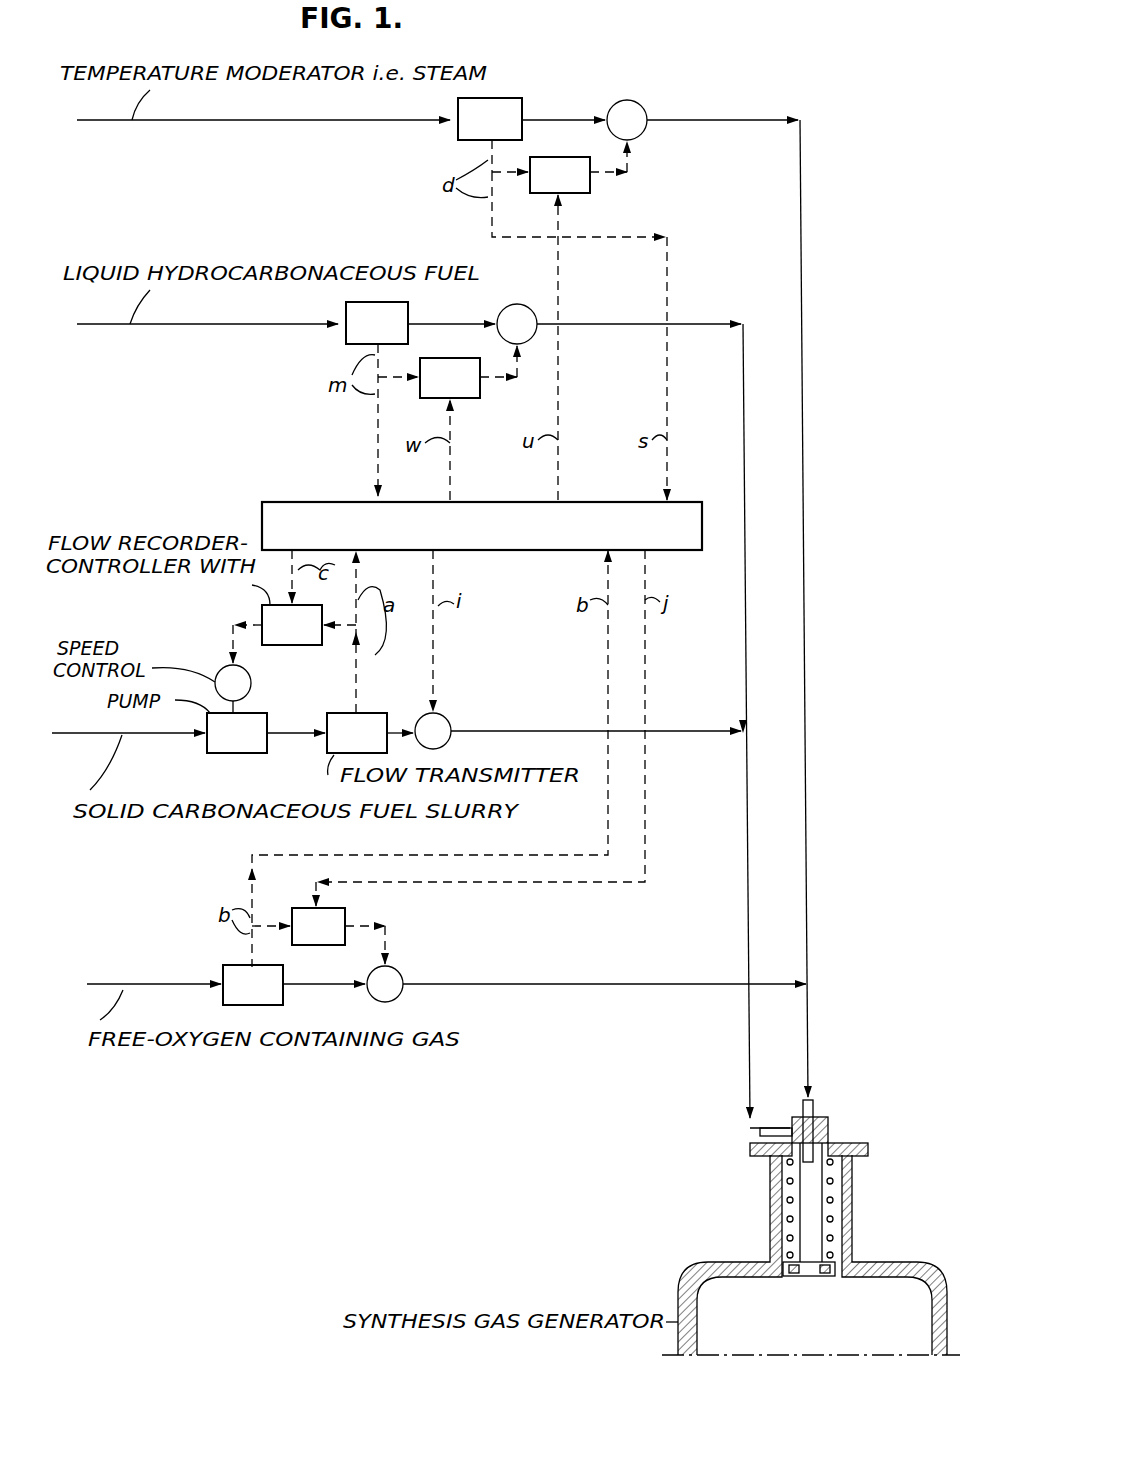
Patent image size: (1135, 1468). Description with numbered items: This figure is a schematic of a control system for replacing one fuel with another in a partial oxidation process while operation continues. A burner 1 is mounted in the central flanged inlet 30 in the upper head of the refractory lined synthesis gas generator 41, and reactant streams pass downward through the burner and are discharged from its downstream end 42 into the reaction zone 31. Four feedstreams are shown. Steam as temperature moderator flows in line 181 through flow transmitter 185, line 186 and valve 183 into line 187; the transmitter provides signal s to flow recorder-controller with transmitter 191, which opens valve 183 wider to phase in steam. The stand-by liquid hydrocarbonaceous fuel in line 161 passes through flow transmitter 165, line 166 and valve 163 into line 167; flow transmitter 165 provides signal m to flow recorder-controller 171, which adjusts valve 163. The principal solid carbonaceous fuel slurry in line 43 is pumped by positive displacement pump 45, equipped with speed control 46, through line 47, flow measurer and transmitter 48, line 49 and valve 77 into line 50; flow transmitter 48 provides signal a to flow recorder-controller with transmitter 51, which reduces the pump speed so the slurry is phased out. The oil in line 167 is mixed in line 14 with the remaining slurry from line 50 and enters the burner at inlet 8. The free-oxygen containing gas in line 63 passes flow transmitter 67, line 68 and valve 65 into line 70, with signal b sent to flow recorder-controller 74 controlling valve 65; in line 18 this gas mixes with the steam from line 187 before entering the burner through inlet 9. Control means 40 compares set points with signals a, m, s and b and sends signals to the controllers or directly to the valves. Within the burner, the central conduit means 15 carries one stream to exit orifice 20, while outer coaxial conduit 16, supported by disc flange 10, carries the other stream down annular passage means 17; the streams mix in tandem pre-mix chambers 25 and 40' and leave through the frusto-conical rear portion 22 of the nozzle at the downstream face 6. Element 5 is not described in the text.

The line 181 is at (138, 126).
The flow transmitter 185 is at (522, 100).
The line 186 is at (566, 118).
The valve 183 is at (640, 104).
The line 187 is at (722, 120).
The flow recorder-controller with transmitter 191 is at (585, 150).
The line 161 is at (138, 330).
The flow transmitter 165 is at (346, 306).
The line 166 is at (458, 300).
The valve 163 is at (525, 305).
The line 167 is at (693, 322).
The flow recorder-controller with transmitter 171 is at (470, 352).
The control means 40 is at (482, 508).
The flow recorder-controller with transmitter 51 is at (203, 631).
The speed control 46 is at (250, 678).
The positive displacement pump 45 is at (265, 713).
The line 47 is at (293, 732).
The flow measurer and transmitter 48 is at (366, 713).
The line 49 is at (392, 726).
The valve 77 is at (447, 718).
The line 50 is at (540, 730).
The line 43 is at (140, 736).
The line 14 is at (746, 895).
The flow recorder-controller with transmitter 74 is at (300, 908).
The line 63 is at (150, 968).
The flow transmitter 67 is at (230, 967).
The line 68 is at (326, 982).
The valve 65 is at (398, 972).
The line 70 is at (605, 982).
The line 18 is at (812, 1093).
The inlet 8 is at (782, 1125).
The inlet 9 is at (815, 1130).
The central conduit means 15 is at (824, 1135).
The annular passage means 17 is at (830, 1140).
The outer coaxial conduit 16 is at (840, 1146).
The disc flange 10 is at (860, 1150).
The burner 1 is at (762, 1143).
The exit orifice 20 is at (788, 1180).
The burner body 5 is at (850, 1192).
The pre-mix zone 25 is at (800, 1197).
The pre-mix chamber 40' is at (848, 1208).
The central flanged inlet 30 is at (772, 1226).
The synthesis gas generator 41 is at (920, 1262).
The downstream end 42 is at (790, 1272).
The frusto-conical rear portion 22 is at (808, 1277).
The downstream face 6 is at (826, 1276).
The reaction zone 31 is at (874, 1325).